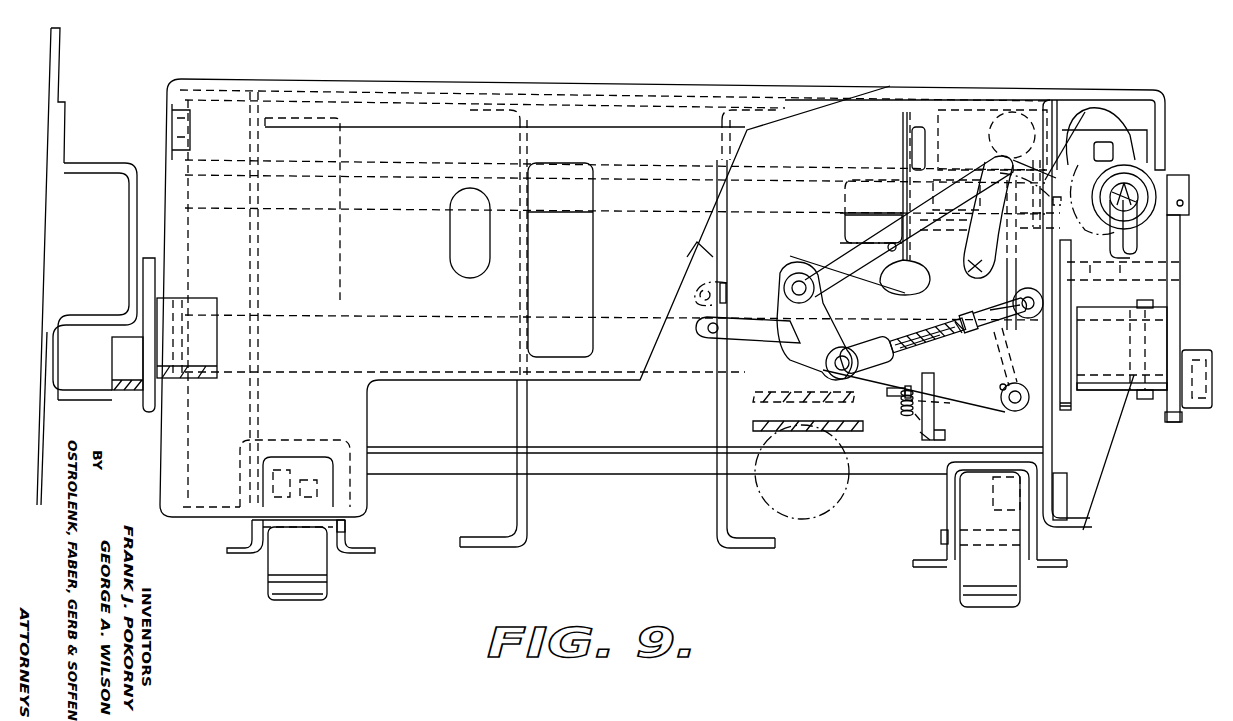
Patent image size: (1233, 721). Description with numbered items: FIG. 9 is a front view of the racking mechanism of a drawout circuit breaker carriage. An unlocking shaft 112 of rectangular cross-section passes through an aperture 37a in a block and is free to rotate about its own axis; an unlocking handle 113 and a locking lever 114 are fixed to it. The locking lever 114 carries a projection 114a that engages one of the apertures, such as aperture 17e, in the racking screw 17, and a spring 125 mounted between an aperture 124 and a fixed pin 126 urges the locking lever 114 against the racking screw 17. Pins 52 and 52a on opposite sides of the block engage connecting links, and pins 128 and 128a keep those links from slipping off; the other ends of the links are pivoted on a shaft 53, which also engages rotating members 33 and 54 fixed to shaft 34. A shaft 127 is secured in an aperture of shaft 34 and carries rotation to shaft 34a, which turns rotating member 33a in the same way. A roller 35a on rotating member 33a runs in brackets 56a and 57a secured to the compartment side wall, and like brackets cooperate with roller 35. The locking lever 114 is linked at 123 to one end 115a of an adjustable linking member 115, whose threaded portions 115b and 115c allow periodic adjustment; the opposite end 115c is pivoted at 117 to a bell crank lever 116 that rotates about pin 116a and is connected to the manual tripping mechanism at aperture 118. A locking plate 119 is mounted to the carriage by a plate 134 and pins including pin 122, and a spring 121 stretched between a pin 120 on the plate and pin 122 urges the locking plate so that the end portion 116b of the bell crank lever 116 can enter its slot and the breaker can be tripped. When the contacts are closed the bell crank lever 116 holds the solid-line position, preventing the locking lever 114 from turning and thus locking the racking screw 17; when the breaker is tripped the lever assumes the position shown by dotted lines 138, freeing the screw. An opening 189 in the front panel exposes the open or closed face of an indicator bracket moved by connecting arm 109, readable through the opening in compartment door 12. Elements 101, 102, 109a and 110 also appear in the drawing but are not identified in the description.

The compartment door 12 is at (800, 421).
The racking screw 17 is at (1140, 178).
The aperture in racking screw 17e is at (1152, 227).
The rotating member 33 is at (1182, 305).
The rotating member 33a is at (150, 262).
The shaft 34 is at (1105, 388).
The shaft 34a is at (215, 288).
The roller 35 is at (1200, 410).
The roller 35a is at (117, 362).
The aperture in block 37a is at (1013, 162).
The pin 52 is at (1189, 190).
The pin 52a is at (1095, 180).
The shaft 53 is at (1180, 270).
The rotating member 54 is at (1070, 412).
The bracket 56a is at (75, 402).
The bracket 57a is at (115, 303).
The caster wheel 101 is at (330, 585).
The caster axle 102 is at (350, 540).
The connecting arm 109 is at (912, 258).
The post 109a is at (922, 124).
The lever 110 is at (1000, 160).
The unlocking shaft 112 is at (1108, 142).
The unlocking handle 113 is at (1125, 253).
The locking lever 114 is at (1026, 245).
The projection 114a is at (1165, 160).
The adjustable linking member 115 is at (880, 333).
The end of linking member 115a is at (1005, 312).
The threaded portion 115b is at (968, 318).
The threaded end of linking member 115c is at (950, 324).
The bell crank lever 116 is at (758, 340).
The pin 116a is at (805, 280).
The end portion of bell crank lever 116b is at (1003, 350).
The pivot 117 is at (835, 355).
The aperture 118 is at (708, 332).
The locking plate 119 is at (923, 430).
The pin 120 is at (887, 392).
The spring 121 is at (892, 405).
The pin 122 is at (920, 420).
The link point 123 is at (1017, 270).
The aperture 124 is at (958, 340).
The spring 125 is at (1003, 386).
The fixed pin 126 is at (1015, 412).
The shaft 127 is at (700, 372).
The pin 128 is at (1184, 204).
The pin 128a is at (1055, 195).
The plate 134 is at (937, 430).
The dotted-line position of bell crank lever 138 is at (693, 283).
The opening 189 is at (845, 228).